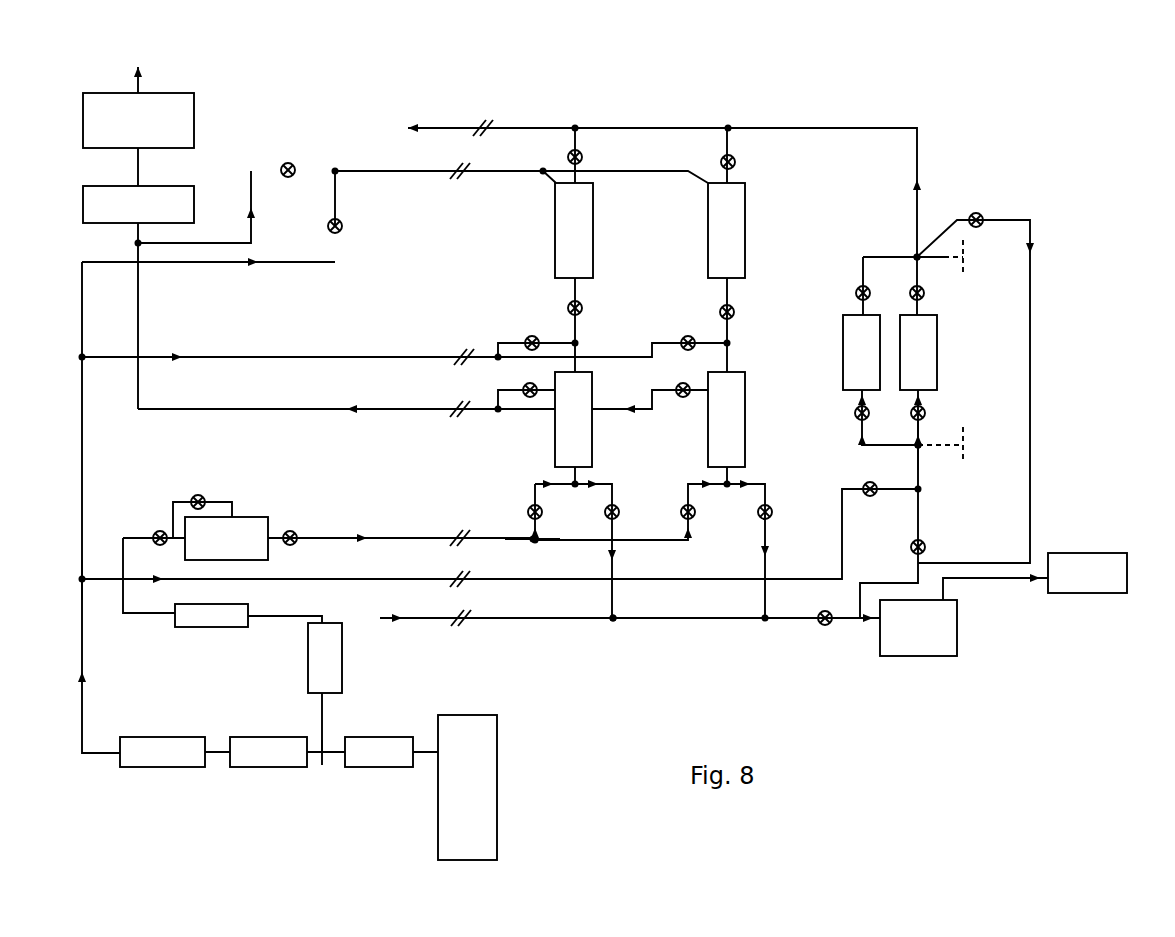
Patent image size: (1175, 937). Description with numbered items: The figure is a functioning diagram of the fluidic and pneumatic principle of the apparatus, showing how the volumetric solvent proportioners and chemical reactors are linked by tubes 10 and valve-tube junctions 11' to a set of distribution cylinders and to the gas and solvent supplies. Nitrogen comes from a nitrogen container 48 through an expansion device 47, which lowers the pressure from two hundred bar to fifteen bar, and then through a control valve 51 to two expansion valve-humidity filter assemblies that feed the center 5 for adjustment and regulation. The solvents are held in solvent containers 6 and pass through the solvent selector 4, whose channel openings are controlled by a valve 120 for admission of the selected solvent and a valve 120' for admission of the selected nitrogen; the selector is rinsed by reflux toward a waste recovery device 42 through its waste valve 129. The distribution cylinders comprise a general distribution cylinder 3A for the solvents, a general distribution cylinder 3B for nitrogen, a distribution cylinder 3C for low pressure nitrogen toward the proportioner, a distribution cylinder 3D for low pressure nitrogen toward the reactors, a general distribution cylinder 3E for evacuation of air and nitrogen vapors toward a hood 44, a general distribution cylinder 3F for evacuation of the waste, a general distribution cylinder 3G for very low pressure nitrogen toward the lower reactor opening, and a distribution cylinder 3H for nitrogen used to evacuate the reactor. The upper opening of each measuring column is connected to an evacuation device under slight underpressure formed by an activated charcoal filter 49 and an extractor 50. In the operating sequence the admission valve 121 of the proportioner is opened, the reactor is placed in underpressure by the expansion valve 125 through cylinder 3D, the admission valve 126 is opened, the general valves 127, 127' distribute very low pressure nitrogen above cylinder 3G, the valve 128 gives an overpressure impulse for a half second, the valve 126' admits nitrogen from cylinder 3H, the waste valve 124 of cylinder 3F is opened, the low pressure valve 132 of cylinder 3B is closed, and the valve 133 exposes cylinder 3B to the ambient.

The solvent selector 4 is at (917, 257).
The center for adjustment and regulation 5 is at (252, 517).
The solvent containers 6 is at (917, 360).
The tubes 10 is at (100, 582).
The valve-tube junction 11' is at (619, 176).
The general distribution cylinder for the solvents 3A is at (728, 128).
The general distribution cylinder for nitrogen 3B is at (918, 445).
The distribution cylinder for low pressure nitrogen 3C is at (335, 168).
The distribution cylinder for low pressure nitrogen toward the reactors 3D is at (497, 410).
The general distribution cylinder for evacuation of air and nitrogen vapors 3E is at (886, 574).
The general distribution cylinder for evacuation of the waste 3F is at (613, 618).
The general distribution cylinder for very low pressure nitrogen 3G is at (533, 538).
The distribution cylinder for nitrogen 3H is at (497, 355).
The waste recovery device 42 is at (928, 646).
The hood 44 is at (1083, 580).
The expansion device 47 is at (388, 748).
The nitrogen container 48 is at (475, 783).
The activated charcoal filter 49 is at (82, 202).
The extractor 50 is at (82, 122).
The control valve 51 is at (331, 742).
The valve for admission of the selected solvent 120 is at (848, 282).
The valve for admission of the selected nitrogen 120' is at (844, 405).
The admission valve 121 is at (735, 160).
The waste valve 124 is at (818, 625).
The expansion valve 125 is at (677, 387).
The admission valve 126 is at (651, 287).
The valve for admission of nitrogen 126' is at (610, 325).
The general valve 127 is at (134, 519).
The general valve 127' is at (328, 504).
The overpressure impulse valve 128 is at (203, 493).
The waste valve 129 is at (981, 213).
The low pressure valve 132 is at (865, 484).
The valve for exposing to the ambient 133 is at (925, 543).